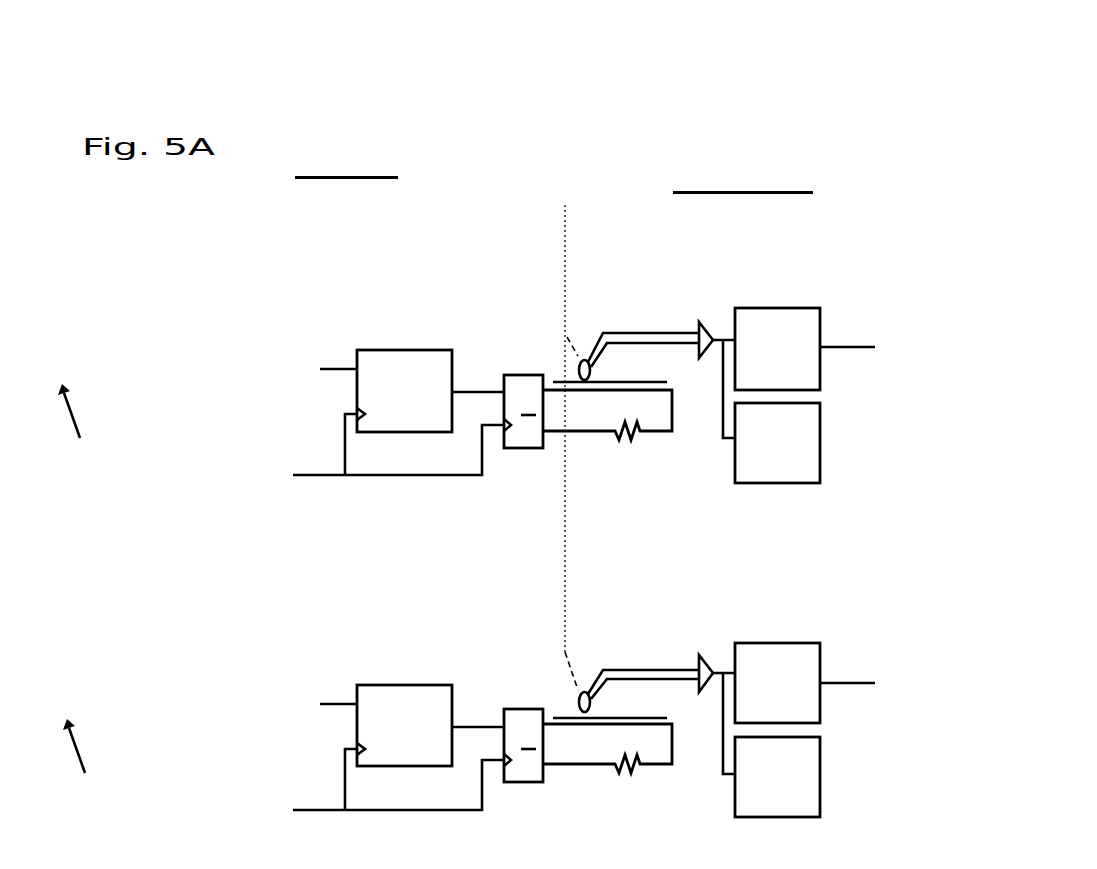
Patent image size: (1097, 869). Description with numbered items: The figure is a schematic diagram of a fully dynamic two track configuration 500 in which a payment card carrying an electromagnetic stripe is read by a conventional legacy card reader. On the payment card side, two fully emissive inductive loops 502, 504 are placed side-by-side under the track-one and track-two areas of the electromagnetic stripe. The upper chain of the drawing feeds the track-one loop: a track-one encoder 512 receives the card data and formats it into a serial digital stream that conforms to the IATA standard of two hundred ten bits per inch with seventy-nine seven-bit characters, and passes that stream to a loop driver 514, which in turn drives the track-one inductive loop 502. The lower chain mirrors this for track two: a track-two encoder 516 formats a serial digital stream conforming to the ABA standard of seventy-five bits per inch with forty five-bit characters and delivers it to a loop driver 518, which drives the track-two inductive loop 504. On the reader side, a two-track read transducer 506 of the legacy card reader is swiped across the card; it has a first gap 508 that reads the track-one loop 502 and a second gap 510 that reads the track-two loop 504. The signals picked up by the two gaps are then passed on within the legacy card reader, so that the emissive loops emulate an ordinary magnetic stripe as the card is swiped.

The fully dynamic two track configuration 500 is at (436, 52).
The fully emissive inductive loop 502 is at (619, 395).
The fully emissive inductive loop 504 is at (617, 731).
The two-track read transducer 506 is at (565, 243).
The first gap 508 is at (585, 360).
The second gap 510 is at (585, 692).
The track-1 encoder 512 is at (403, 350).
The loop driver 514 is at (505, 449).
The track-2 encoder 516 is at (393, 685).
The loop driver 518 is at (527, 783).